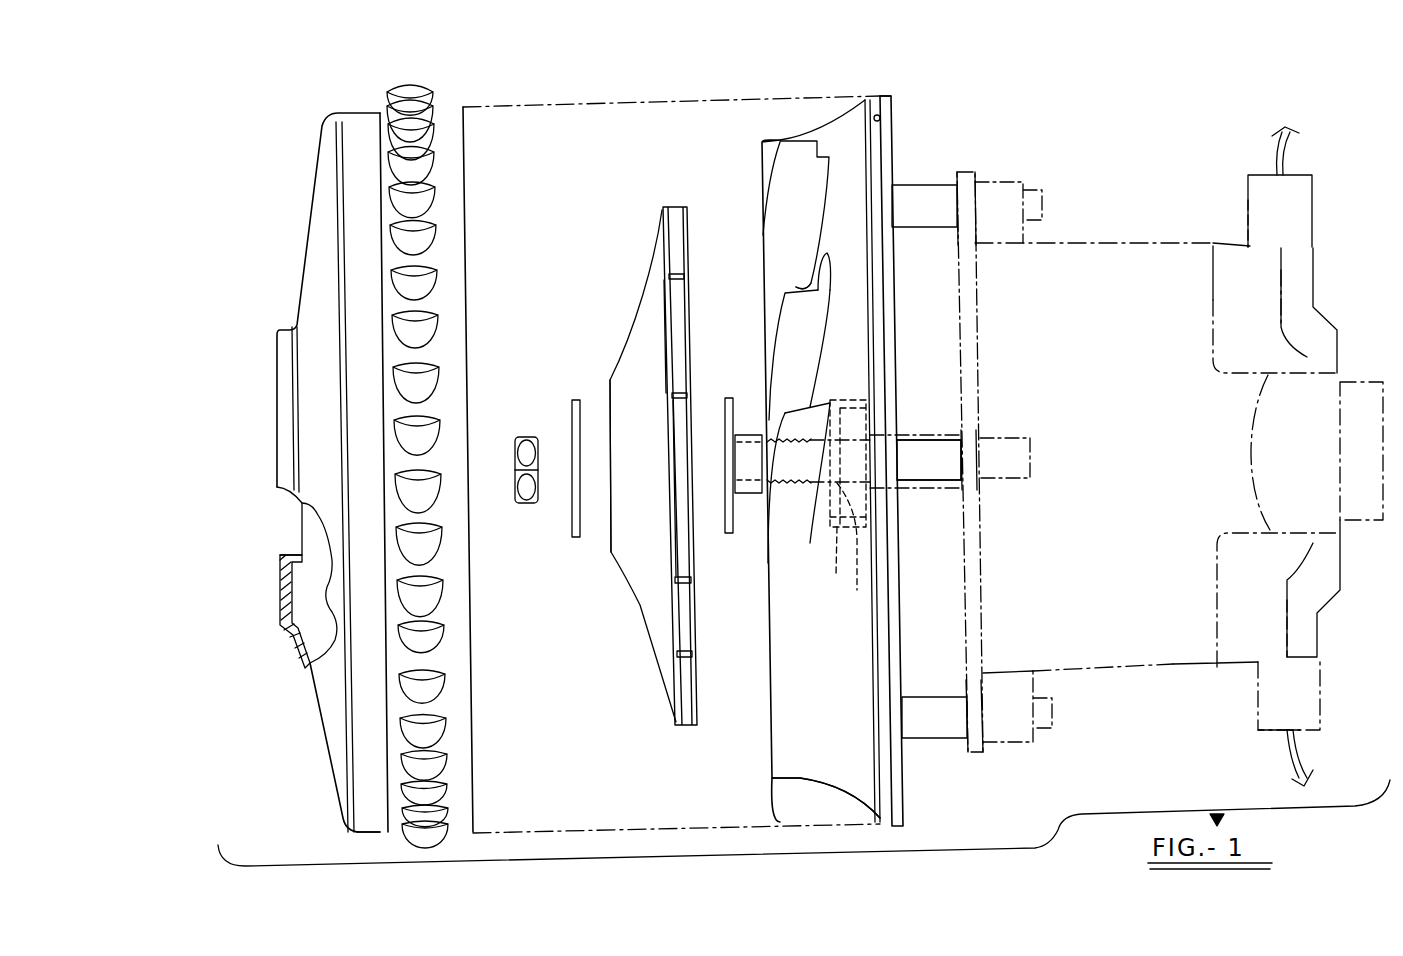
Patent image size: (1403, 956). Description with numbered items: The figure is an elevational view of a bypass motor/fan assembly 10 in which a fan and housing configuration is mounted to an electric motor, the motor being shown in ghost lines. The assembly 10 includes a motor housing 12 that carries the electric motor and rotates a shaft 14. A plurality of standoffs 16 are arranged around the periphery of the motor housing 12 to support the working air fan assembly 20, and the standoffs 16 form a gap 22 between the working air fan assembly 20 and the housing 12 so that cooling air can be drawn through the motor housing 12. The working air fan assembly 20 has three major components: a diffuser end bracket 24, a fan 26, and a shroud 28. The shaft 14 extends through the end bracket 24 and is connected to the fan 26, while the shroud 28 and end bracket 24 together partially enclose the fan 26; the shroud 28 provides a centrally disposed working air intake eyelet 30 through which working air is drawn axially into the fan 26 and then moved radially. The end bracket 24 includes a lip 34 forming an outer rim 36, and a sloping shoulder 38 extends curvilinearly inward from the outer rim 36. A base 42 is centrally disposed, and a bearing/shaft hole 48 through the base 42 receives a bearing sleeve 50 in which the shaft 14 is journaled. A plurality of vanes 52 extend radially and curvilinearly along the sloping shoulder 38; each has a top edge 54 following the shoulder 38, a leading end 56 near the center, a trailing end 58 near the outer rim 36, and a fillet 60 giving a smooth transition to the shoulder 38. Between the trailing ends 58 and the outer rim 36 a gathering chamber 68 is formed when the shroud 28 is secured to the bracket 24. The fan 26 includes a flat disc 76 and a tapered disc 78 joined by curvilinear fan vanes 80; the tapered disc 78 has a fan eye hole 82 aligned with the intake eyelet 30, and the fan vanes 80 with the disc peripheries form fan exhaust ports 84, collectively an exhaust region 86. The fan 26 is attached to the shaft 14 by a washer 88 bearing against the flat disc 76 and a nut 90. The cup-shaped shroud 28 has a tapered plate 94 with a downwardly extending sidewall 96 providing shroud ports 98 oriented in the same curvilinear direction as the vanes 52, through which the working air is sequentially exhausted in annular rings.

The bypass motor/fan assembly 10 is at (270, 116).
The motor housing 12 is at (1113, 232).
The shaft 14 is at (905, 490).
The standoffs 16 is at (923, 190).
The working air fan assembly 20 is at (246, 373).
The gap 22 is at (932, 322).
The diffuser end bracket 24 is at (772, 460).
The fan 26 is at (651, 469).
The shroud 28 is at (295, 293).
The working air intake eyelet 30 is at (288, 522).
The lip 34 is at (879, 116).
The outer rim 36 is at (887, 95).
The sloping shoulder 38 is at (843, 152).
The base 42 is at (836, 556).
The bearing/shaft hole 48 is at (856, 588).
The bearing sleeve 50 is at (748, 433).
The vanes 52 is at (762, 197).
The top edge 54 is at (783, 320).
The leading end 56 is at (768, 560).
The trailing end 58 is at (795, 284).
The fillet 60 is at (826, 268).
The gathering chamber 68 is at (767, 803).
The flat disc 76 is at (696, 635).
The tapered disc 78 is at (648, 620).
The fan vanes 80 is at (673, 206).
The fan eye hole 82 is at (604, 508).
The fan exhaust ports 84 is at (675, 350).
The exhaust region 86 is at (697, 737).
The washer 88 is at (573, 398).
The nut 90 is at (525, 435).
The tapered plate 94 is at (306, 653).
The sidewall 96 is at (370, 833).
The shroud ports 98 is at (416, 86).